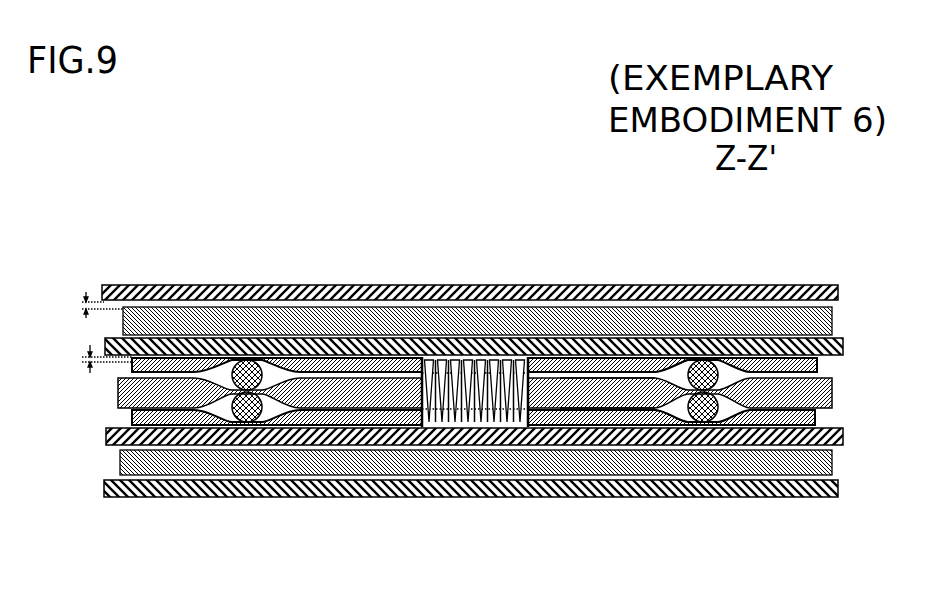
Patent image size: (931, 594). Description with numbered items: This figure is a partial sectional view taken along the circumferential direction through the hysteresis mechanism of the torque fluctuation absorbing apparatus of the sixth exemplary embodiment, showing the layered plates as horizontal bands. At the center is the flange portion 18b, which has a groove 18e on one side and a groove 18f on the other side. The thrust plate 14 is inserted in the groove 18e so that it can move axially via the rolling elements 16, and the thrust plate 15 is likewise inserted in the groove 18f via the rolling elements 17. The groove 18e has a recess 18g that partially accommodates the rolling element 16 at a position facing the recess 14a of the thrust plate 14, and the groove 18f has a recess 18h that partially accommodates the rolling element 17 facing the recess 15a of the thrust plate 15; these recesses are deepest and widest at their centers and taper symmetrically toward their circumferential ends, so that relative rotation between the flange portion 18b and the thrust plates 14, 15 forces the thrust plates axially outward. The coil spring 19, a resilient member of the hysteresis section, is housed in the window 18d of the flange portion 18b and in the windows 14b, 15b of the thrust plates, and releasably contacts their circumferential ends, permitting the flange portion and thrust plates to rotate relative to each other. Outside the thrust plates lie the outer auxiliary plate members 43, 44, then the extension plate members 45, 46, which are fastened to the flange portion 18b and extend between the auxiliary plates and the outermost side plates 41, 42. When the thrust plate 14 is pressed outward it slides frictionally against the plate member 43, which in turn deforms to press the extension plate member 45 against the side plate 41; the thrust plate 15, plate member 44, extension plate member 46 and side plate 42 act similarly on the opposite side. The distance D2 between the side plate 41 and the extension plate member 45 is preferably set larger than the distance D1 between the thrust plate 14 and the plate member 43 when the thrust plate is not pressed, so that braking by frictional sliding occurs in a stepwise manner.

The side plate 41 is at (205, 285).
The side plate 42 is at (202, 497).
The outer auxiliary plate member 43 is at (310, 342).
The outer auxiliary plate member 44 is at (310, 440).
The extension plate member 45 is at (258, 320).
The extension plate member 46 is at (258, 462).
The thrust plate 14 is at (474, 297).
The recess 14a is at (739, 366).
The window 14b is at (448, 313).
The thrust plate 15 is at (473, 485).
The recess 15a is at (739, 418).
The window 15b is at (440, 455).
The rolling element 16 is at (703, 360).
The rolling element 17 is at (704, 422).
The flange portion 18b is at (393, 388).
The window 18d is at (500, 355).
The groove 18e is at (619, 358).
The groove 18f is at (606, 409).
The recess 18g is at (667, 372).
The recess 18h is at (667, 410).
The coil spring 19 is at (493, 427).
The distance D1 is at (88, 359).
The distance D2 is at (84, 305).